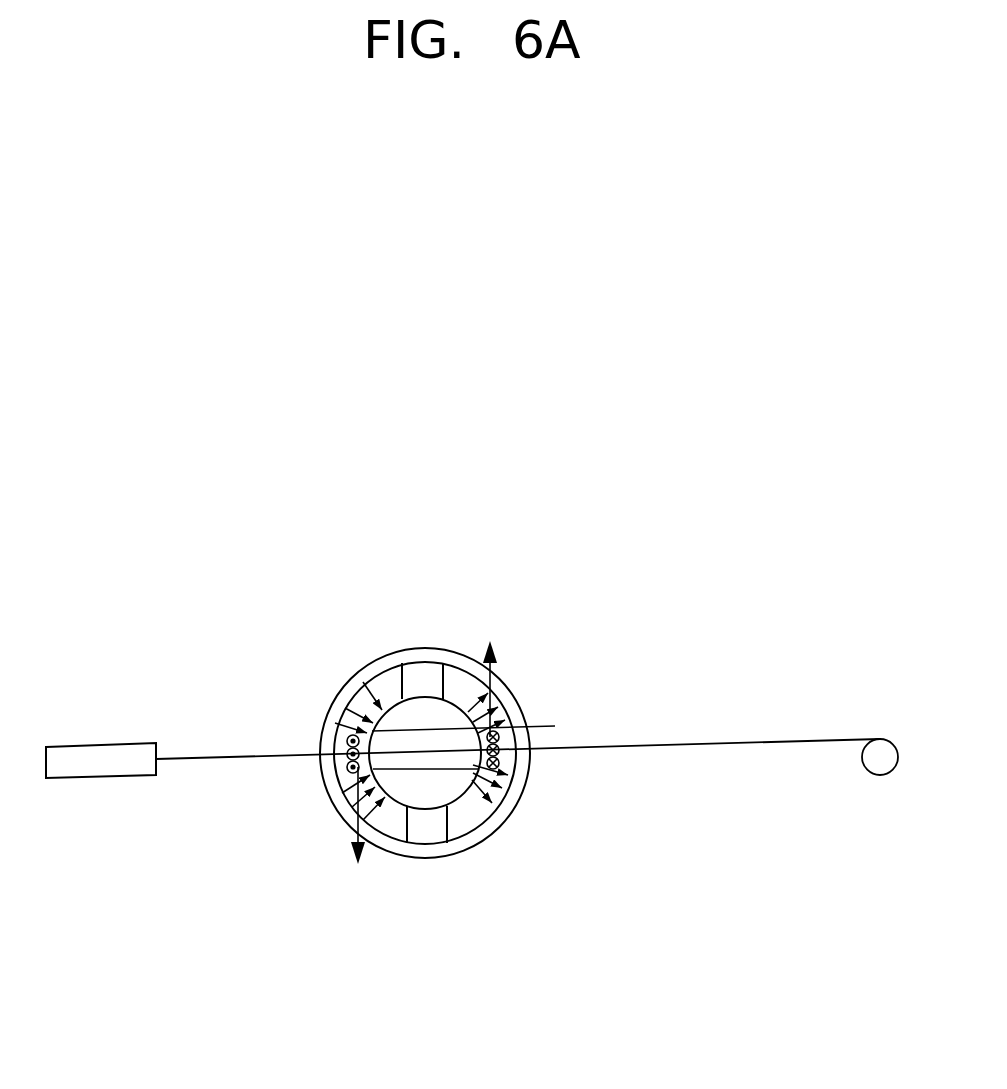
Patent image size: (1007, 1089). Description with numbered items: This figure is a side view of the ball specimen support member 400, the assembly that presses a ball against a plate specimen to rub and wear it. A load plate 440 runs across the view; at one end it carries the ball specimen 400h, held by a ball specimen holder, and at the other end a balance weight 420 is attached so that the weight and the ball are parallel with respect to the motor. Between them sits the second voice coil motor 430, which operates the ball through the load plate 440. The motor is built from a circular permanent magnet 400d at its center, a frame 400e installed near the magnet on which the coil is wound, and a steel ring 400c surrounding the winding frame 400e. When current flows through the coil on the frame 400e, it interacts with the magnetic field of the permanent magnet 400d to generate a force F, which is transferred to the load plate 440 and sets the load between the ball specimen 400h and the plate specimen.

The ball specimen support member 400 is at (108, 550).
The steel ring 400c is at (368, 667).
The circular permanent magnet 400d is at (432, 708).
The frame 400e is at (555, 726).
The ball specimen 400h is at (878, 763).
The balance weight 420 is at (113, 777).
The second voice coil motor 430 is at (308, 820).
The load plate 440 is at (597, 748).